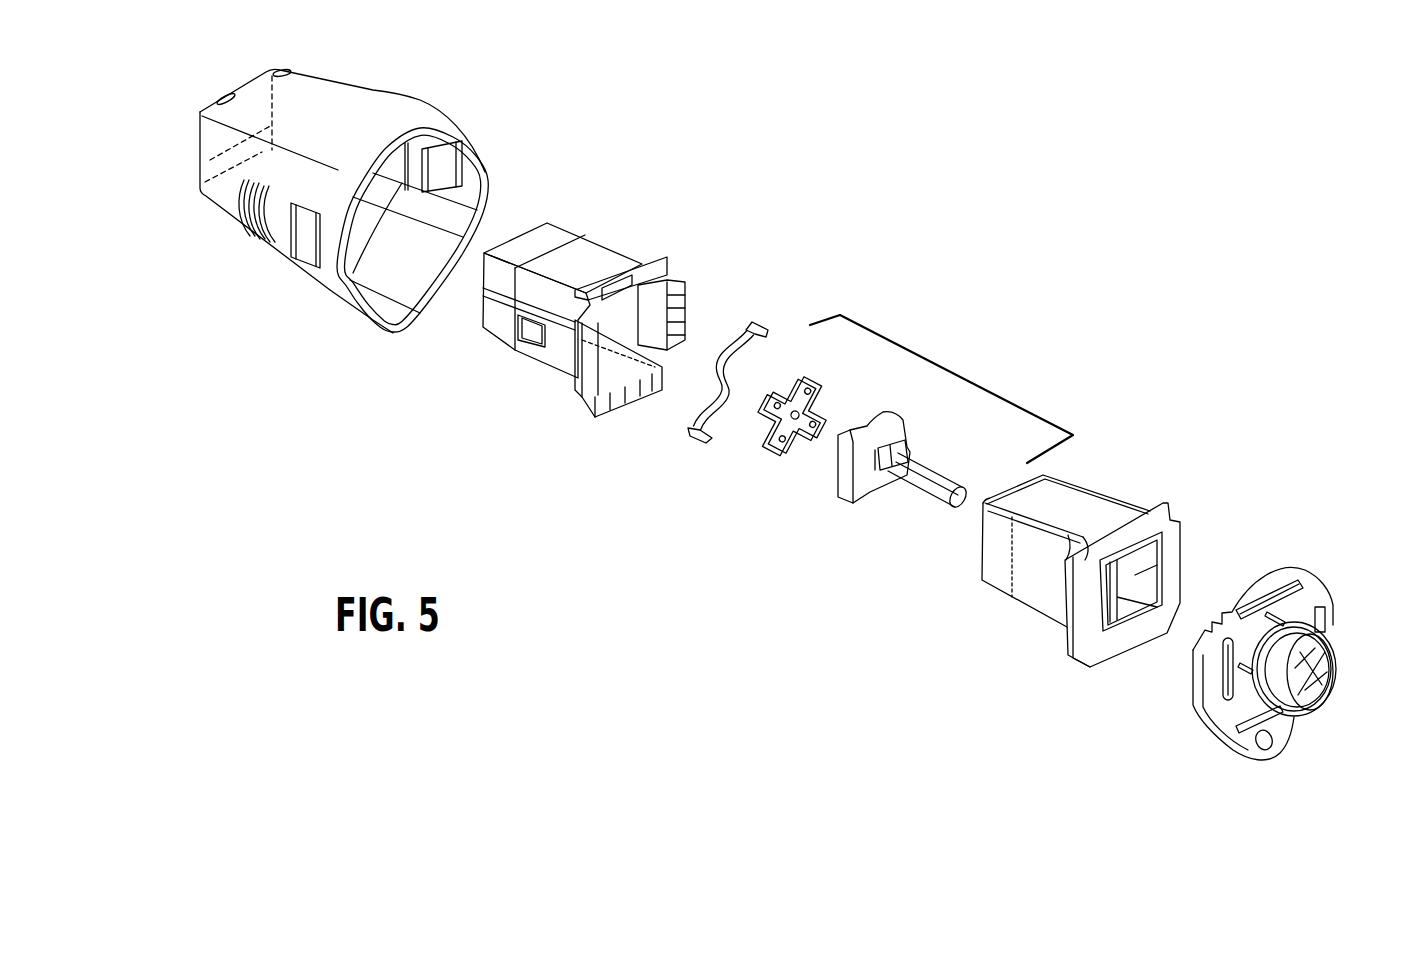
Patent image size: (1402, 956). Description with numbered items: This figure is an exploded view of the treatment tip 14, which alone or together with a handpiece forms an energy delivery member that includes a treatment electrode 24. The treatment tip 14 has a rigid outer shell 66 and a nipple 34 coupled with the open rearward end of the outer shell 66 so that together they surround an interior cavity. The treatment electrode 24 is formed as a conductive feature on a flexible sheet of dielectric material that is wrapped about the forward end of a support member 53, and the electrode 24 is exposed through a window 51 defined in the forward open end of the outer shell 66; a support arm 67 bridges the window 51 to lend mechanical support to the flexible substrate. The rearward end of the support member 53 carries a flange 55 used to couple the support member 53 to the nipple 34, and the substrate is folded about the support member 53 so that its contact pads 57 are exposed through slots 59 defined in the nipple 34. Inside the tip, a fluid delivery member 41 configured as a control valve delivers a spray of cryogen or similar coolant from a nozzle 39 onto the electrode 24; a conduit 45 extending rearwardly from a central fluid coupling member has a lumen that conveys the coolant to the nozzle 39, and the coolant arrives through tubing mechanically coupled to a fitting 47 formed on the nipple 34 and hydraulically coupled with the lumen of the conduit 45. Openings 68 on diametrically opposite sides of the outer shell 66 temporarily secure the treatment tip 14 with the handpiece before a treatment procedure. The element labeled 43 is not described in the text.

The treatment tip 14 is at (980, 177).
The treatment electrode 24 is at (517, 236).
The nipple 34 is at (1298, 561).
The nozzle 39 is at (793, 378).
The fluid delivery member 41 is at (941, 366).
The connector body 43 is at (836, 474).
The conduit 45 is at (913, 483).
The fitting 47 is at (1330, 643).
The window 51 is at (202, 144).
The support member 53 is at (1094, 489).
The flange 55 is at (1160, 500).
The contact pads 57 is at (680, 308).
The slots 59 is at (1300, 585).
The outer shell 66 is at (394, 113).
The support arm 67 is at (690, 436).
The openings 68 is at (442, 166).